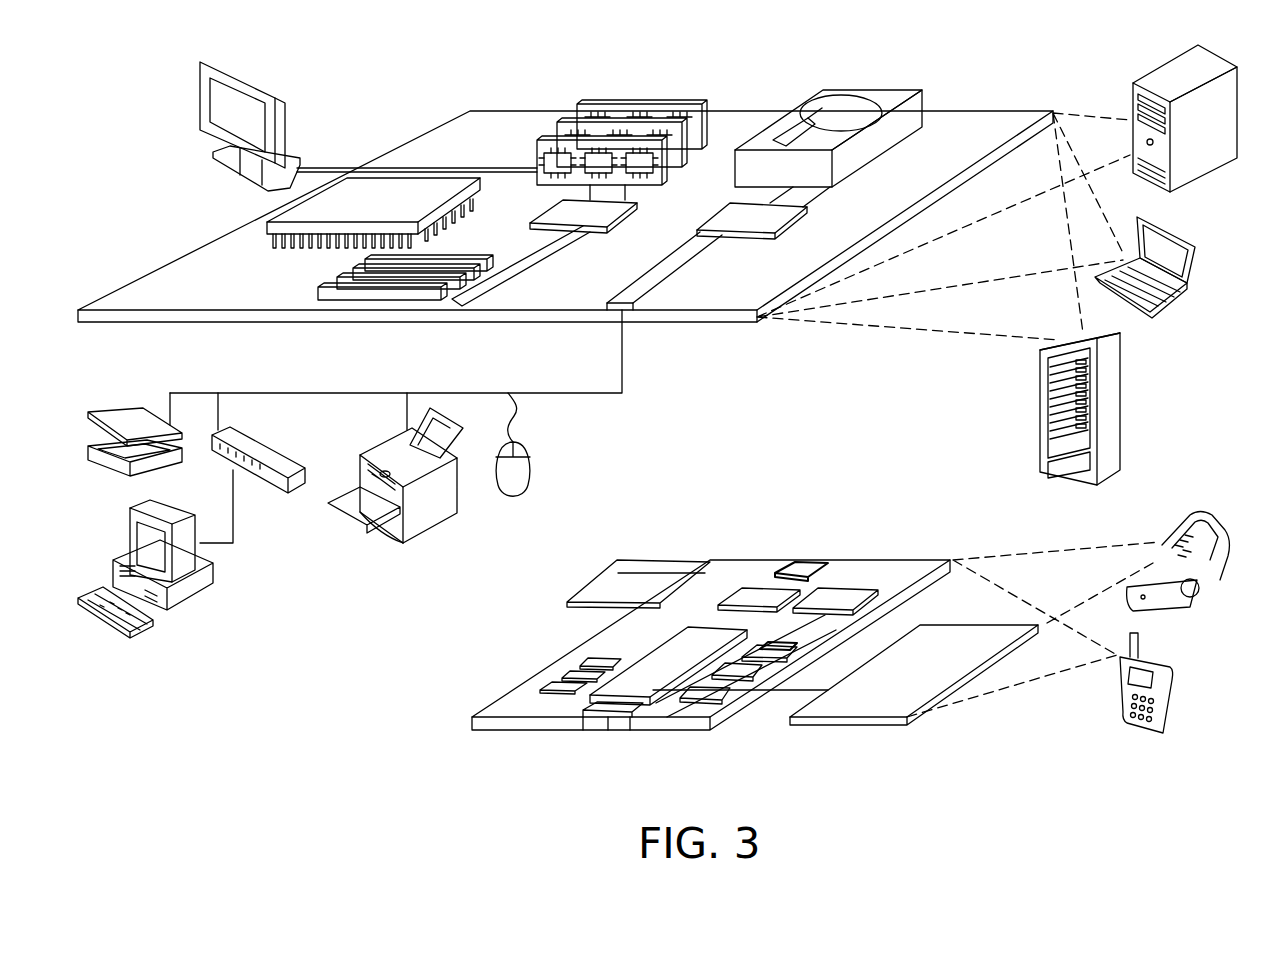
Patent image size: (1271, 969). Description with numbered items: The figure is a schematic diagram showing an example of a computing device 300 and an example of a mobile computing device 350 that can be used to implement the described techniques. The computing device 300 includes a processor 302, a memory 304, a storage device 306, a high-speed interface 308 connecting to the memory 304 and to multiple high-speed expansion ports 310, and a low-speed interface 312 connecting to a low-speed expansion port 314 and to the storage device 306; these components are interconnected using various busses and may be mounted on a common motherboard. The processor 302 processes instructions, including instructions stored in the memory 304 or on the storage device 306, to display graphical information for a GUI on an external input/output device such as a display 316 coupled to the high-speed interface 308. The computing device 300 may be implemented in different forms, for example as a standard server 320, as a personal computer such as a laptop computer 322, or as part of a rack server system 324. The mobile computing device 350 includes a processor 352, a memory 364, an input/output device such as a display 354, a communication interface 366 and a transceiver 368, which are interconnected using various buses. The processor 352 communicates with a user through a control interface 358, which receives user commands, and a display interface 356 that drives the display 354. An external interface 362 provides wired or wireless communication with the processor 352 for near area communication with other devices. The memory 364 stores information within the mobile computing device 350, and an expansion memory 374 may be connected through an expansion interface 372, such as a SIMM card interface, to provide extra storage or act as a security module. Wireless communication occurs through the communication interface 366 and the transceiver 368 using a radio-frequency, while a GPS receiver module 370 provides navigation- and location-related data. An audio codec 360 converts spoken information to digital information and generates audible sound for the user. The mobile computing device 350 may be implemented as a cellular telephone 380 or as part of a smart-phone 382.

The computing device 300 is at (390, 84).
The processor 302 is at (267, 229).
The memory 304 is at (589, 104).
The storage device 306 is at (822, 90).
The high-speed interface 308 is at (553, 207).
The high-speed expansion ports 310 is at (323, 286).
The low-speed interface 312 is at (733, 213).
The low-speed expansion port 314 is at (637, 308).
The display 316 is at (203, 62).
The standard server 320 is at (1135, 98).
The laptop computer 322 is at (1190, 241).
The rack server system 324 is at (1040, 434).
The mobile computing device 350 is at (446, 729).
The processor 352 is at (645, 686).
The display 354 is at (876, 706).
The display interface 356 is at (722, 703).
The control interface 358 is at (743, 674).
The audio codec 360 is at (770, 653).
The external interface 362 is at (607, 729).
The memory 364 is at (560, 690).
The communication interface 366 is at (760, 600).
The transceiver 368 is at (837, 598).
The GPS receiver module 370 is at (807, 563).
The expansion interface 372 is at (692, 567).
The expansion memory 374 is at (618, 573).
The cellular telephone 380 is at (1177, 522).
The smart-phone 382 is at (1120, 690).